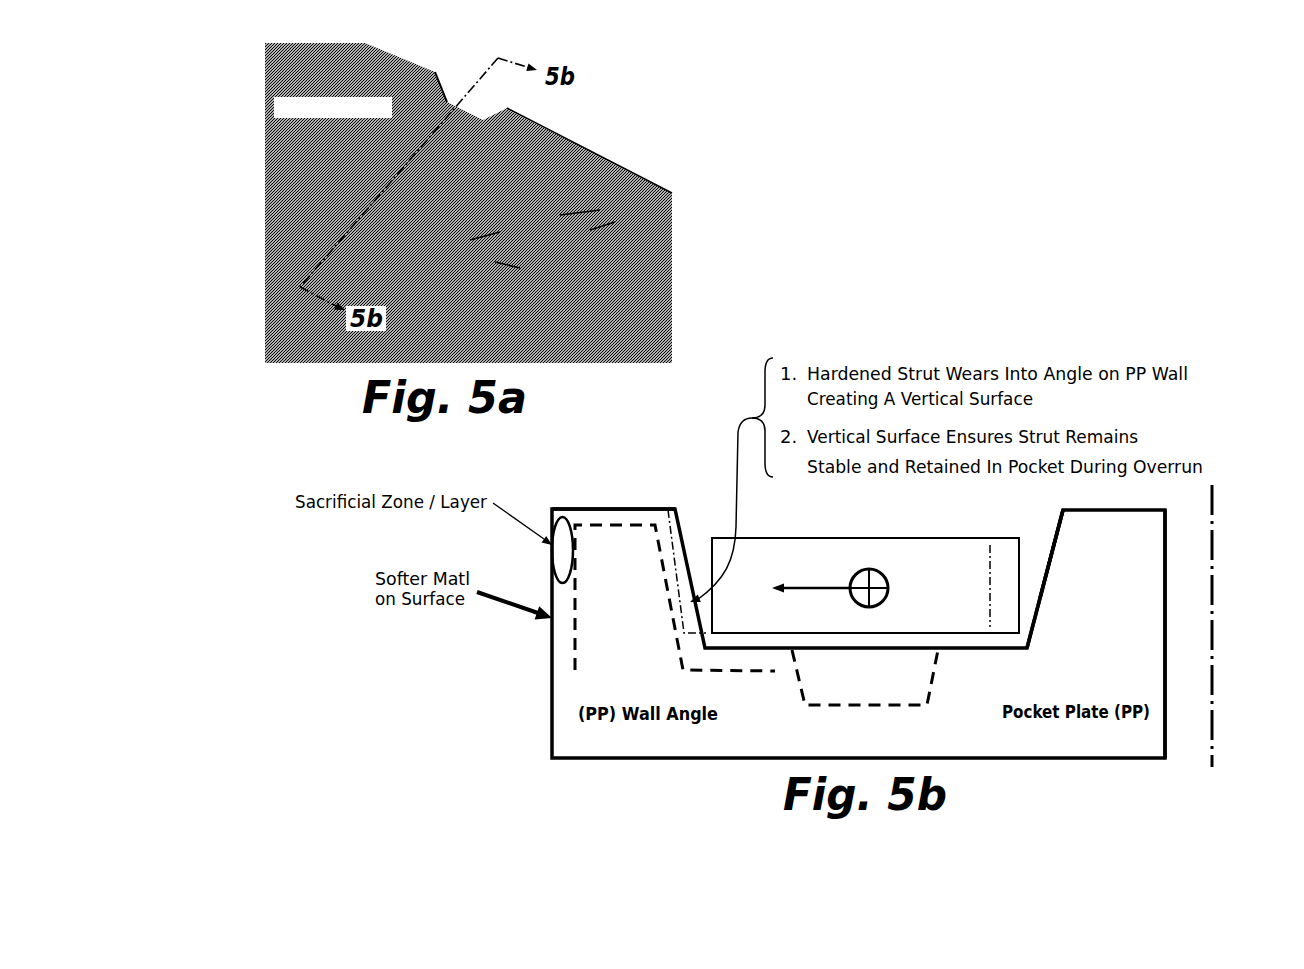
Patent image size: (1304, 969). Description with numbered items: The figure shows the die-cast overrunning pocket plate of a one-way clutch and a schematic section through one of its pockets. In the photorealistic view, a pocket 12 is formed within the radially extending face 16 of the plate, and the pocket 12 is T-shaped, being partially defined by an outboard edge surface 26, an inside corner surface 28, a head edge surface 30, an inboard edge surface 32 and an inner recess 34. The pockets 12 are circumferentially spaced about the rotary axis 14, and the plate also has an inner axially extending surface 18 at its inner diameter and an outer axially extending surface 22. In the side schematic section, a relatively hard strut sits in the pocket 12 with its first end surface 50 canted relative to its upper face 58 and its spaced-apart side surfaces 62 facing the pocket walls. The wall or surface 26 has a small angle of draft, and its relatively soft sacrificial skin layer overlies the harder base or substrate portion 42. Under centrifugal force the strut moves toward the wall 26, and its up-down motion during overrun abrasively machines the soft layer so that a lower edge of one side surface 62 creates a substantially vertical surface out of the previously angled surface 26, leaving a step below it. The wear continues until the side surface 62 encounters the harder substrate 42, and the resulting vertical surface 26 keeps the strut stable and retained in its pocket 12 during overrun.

In FIG. 5A, the pocket 12 is at (589, 195).
In FIG. 5B, the pocket 12 is at (1068, 531).
In FIG. 5B, the rotary axis 14 is at (1213, 598).
In FIG. 5A, the radially extending face 16 is at (337, 77).
In FIG. 5B, the radially extending face 16 is at (617, 509).
In FIG. 5B, the inner axially extending surface 18 is at (1165, 722).
In FIG. 5B, the outer axially extending surface 22 is at (552, 722).
In FIG. 5A, the outboard edge surface 26 is at (603, 218).
In FIG. 5B, the outboard edge surface 26 is at (678, 557).
In FIG. 5A, the inside corner surface 28 is at (488, 120).
In FIG. 5A, the head edge surface 30 is at (416, 116).
In FIG. 5A, the inboard edge surface 32 is at (503, 265).
In FIG. 5B, the inboard edge surface 32 is at (1052, 542).
In FIG. 5A, the inner recess 34 is at (485, 238).
In FIG. 5B, the inner recess 34 is at (865, 703).
In FIG. 5B, the base or substrate portion 42 is at (567, 647).
In FIG. 5B, the first end surface 50 is at (940, 560).
In FIG. 5B, the upper face 58 is at (868, 539).
In FIG. 5B, the side surface 62 is at (668, 508).